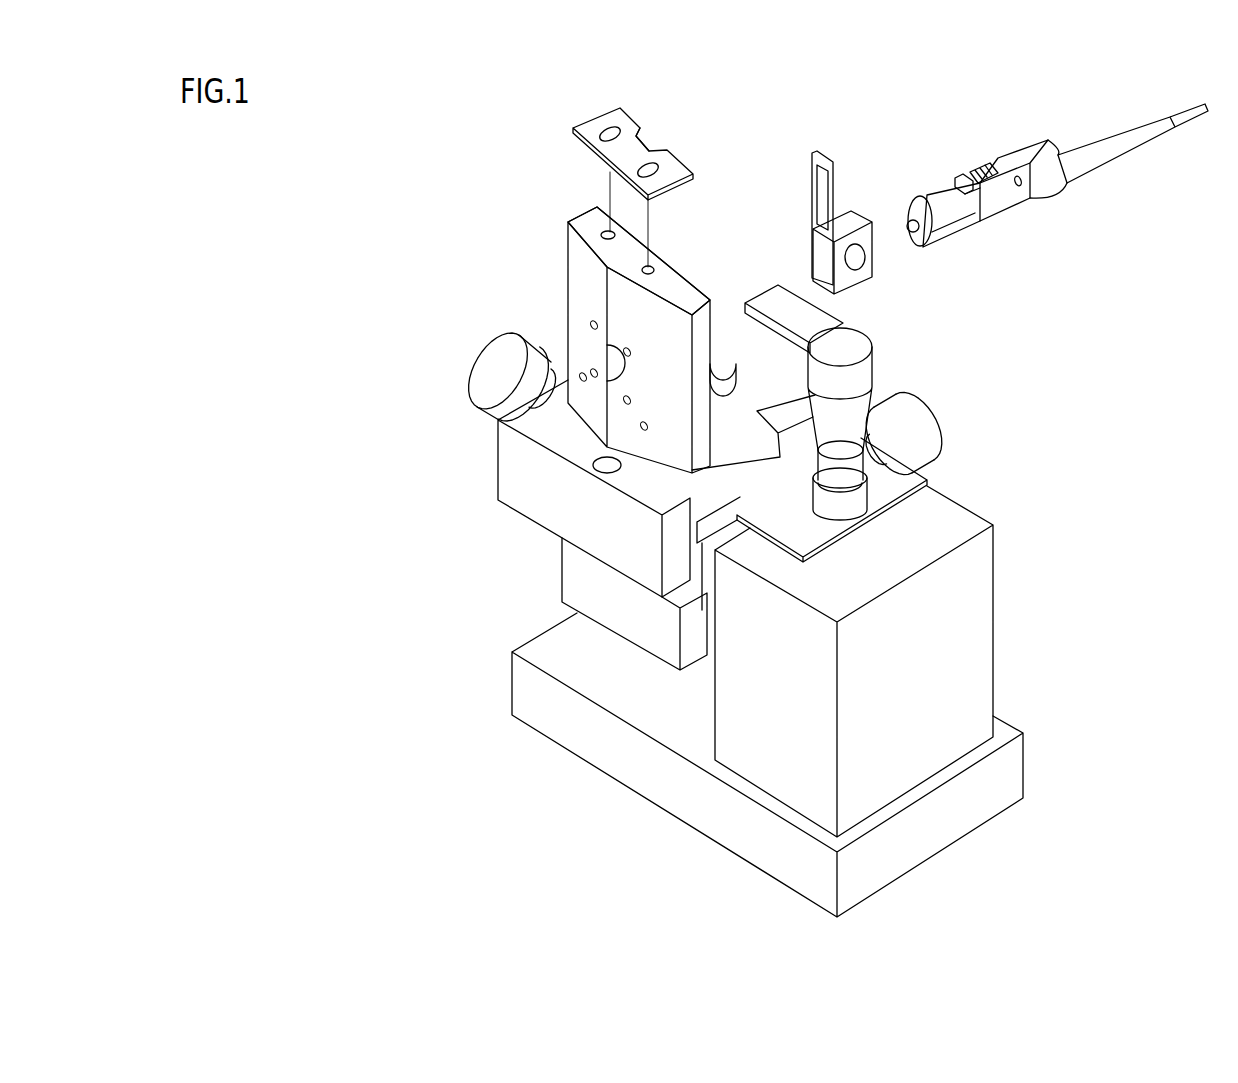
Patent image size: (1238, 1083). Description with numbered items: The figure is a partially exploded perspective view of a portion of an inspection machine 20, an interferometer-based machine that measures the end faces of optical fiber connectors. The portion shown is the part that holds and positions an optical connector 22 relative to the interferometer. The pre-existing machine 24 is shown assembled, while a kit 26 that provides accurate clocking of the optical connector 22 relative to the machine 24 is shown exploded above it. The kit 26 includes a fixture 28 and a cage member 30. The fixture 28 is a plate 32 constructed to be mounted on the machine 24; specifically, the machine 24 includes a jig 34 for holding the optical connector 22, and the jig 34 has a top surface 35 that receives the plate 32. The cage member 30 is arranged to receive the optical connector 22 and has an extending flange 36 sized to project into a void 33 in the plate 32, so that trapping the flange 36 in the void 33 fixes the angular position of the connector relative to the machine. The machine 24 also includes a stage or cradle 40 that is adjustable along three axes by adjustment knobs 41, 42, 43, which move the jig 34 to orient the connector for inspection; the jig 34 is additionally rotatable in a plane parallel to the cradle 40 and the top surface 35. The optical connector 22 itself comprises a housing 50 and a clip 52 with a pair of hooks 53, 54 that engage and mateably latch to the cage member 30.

The inspection machine 20 is at (459, 216).
The optical connector 22 is at (1057, 166).
The machine 24 is at (651, 461).
The kit 26 is at (820, 186).
The fixture 28 is at (658, 166).
The cage member 30 is at (857, 124).
The plate 32 is at (673, 173).
The void 33 is at (640, 137).
The jig 34 is at (585, 290).
The top surface 35 is at (587, 215).
The extending flange 36 is at (810, 190).
The cradle 40 is at (522, 420).
The adjustment knob 41 is at (468, 368).
The adjustment knob 42 is at (943, 438).
The adjustment knob 43 is at (872, 360).
The housing 50 is at (1000, 208).
The clip 52 is at (978, 165).
The hook 53 is at (972, 195).
The hook 54 is at (958, 174).